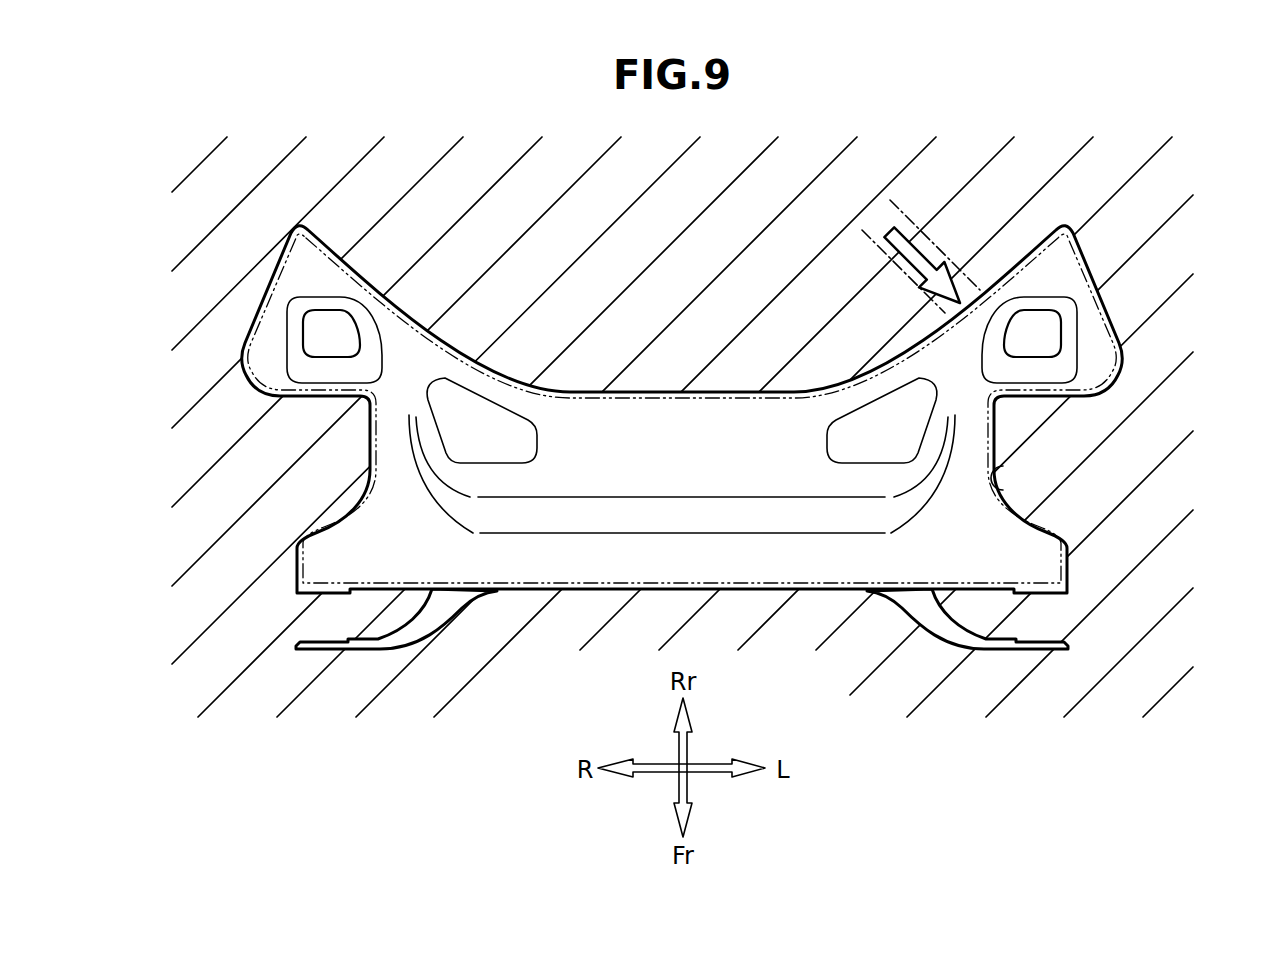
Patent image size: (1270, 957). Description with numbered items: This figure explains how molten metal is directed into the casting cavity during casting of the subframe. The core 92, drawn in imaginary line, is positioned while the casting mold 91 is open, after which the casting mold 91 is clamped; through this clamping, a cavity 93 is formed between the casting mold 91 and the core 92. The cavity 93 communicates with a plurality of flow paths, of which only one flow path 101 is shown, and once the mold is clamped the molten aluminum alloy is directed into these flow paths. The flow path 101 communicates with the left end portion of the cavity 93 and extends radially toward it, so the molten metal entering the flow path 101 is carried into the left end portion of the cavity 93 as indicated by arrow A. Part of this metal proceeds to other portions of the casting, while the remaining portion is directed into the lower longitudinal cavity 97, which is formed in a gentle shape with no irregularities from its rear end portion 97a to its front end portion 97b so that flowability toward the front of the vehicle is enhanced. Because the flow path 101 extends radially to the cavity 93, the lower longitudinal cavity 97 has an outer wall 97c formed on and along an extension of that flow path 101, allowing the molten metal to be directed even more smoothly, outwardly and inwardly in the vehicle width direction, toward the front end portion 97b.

The casting mold 91 is at (1037, 160).
The core 92 is at (1097, 262).
The arrow A is at (915, 248).
The flow path 101 is at (908, 272).
The lower longitudinal cavity 97 is at (973, 500).
The rear end portion 97a is at (972, 413).
The front end portion 97b is at (992, 562).
The outer wall 97c is at (1005, 490).
The cavity 93 is at (793, 483).